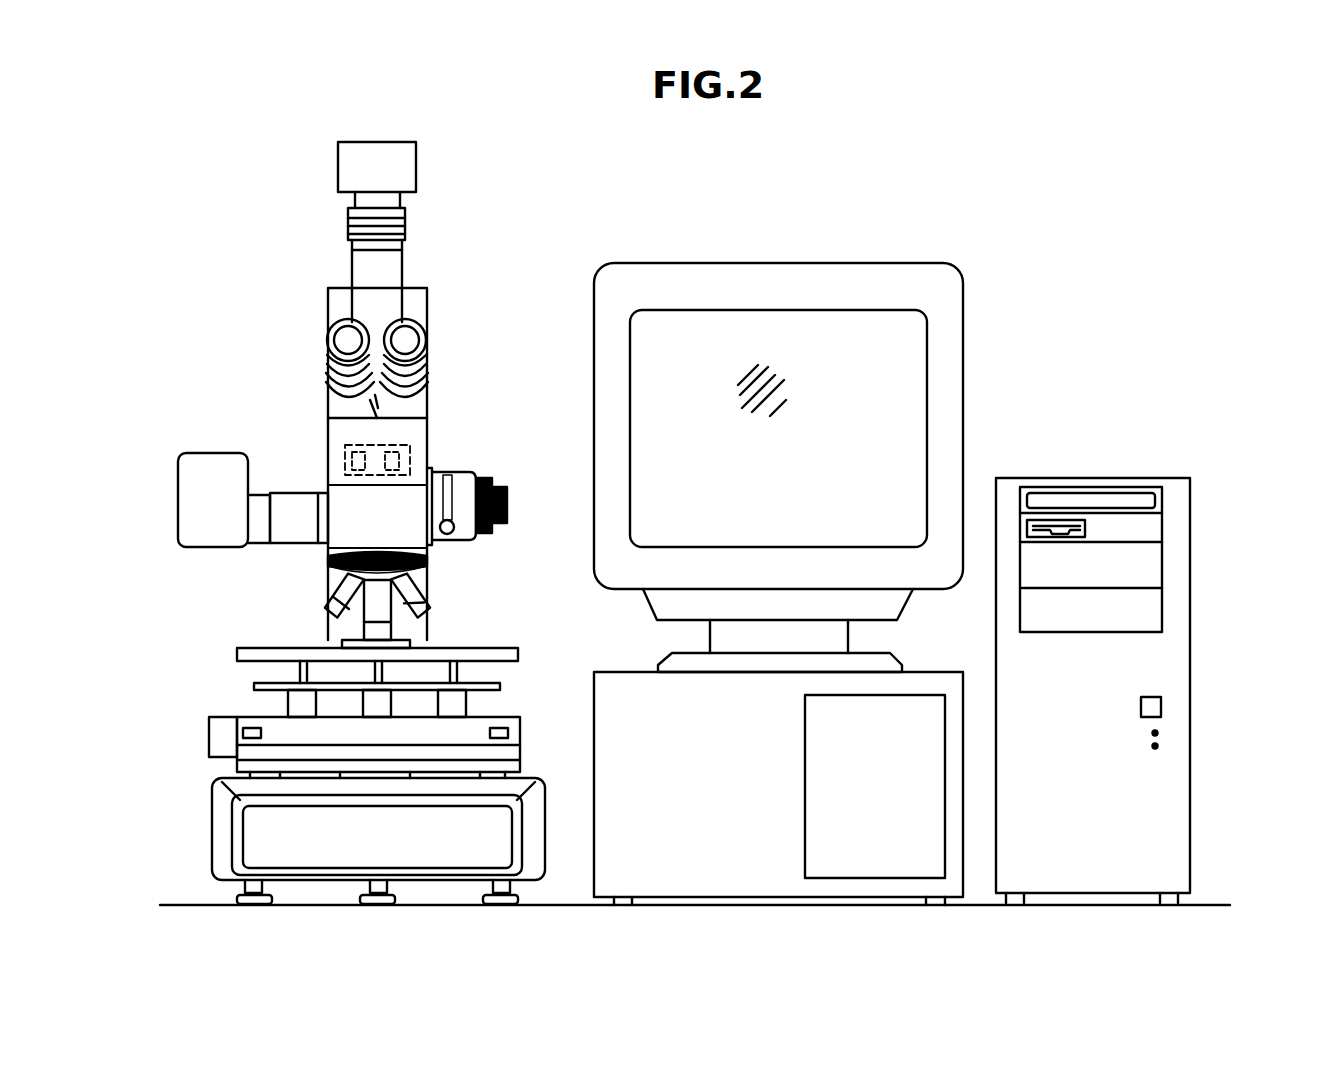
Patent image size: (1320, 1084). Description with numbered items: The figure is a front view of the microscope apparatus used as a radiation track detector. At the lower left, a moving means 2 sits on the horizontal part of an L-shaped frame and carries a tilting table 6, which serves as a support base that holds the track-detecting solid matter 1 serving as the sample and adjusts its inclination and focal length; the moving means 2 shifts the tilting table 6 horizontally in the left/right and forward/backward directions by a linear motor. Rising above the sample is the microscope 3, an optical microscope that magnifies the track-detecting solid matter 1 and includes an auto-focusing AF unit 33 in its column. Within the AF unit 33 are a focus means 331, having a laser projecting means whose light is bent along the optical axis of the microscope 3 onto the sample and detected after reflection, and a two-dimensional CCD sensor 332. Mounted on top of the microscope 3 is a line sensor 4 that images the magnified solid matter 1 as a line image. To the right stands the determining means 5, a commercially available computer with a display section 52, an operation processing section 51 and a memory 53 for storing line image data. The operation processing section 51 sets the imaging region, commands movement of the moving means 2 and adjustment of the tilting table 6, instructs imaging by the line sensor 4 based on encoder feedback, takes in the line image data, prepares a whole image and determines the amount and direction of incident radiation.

The track-detecting solid matter 1 is at (350, 640).
The moving means 2 is at (236, 722).
The microscope 3 is at (302, 350).
The line sensor 4 is at (343, 164).
The determining means 5 is at (968, 278).
The tilting table 6 is at (246, 686).
The auto-focusing AF unit 33 is at (328, 454).
The operation processing section 51 is at (1105, 478).
The display section 52 is at (905, 345).
The memory 53 is at (793, 687).
The focus means 331 is at (400, 462).
The two-dimensional CCD sensor 332 is at (360, 462).